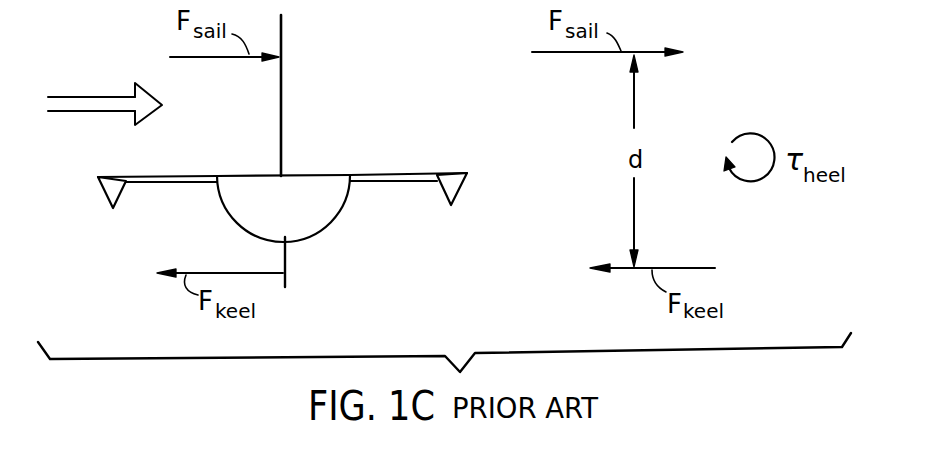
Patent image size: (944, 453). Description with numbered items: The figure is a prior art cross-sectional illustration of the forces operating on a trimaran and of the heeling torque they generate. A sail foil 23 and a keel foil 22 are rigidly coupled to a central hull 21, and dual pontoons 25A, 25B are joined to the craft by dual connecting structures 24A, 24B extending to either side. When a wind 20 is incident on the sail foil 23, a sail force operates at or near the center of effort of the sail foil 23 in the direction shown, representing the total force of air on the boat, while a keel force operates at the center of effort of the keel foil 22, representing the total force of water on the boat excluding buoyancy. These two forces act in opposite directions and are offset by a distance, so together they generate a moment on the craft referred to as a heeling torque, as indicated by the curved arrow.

The wind 20 is at (87, 97).
The hull 21 is at (242, 210).
The keel foil 22 is at (290, 250).
The sail foil 23 is at (285, 100).
The connecting structure 24A is at (175, 177).
The connecting structure 24B is at (382, 171).
The pontoon 25A is at (113, 176).
The pontoon 25B is at (455, 169).